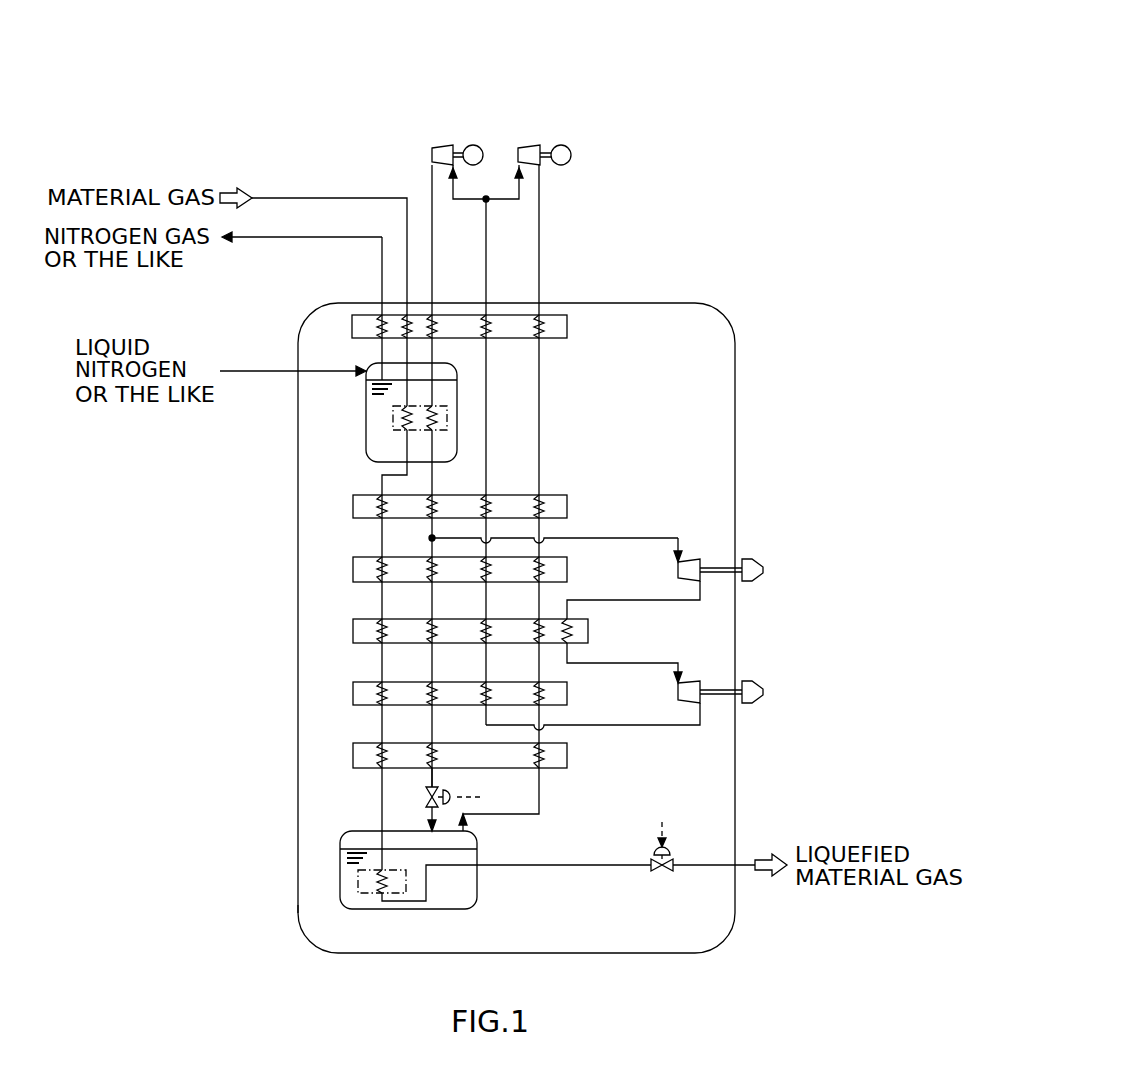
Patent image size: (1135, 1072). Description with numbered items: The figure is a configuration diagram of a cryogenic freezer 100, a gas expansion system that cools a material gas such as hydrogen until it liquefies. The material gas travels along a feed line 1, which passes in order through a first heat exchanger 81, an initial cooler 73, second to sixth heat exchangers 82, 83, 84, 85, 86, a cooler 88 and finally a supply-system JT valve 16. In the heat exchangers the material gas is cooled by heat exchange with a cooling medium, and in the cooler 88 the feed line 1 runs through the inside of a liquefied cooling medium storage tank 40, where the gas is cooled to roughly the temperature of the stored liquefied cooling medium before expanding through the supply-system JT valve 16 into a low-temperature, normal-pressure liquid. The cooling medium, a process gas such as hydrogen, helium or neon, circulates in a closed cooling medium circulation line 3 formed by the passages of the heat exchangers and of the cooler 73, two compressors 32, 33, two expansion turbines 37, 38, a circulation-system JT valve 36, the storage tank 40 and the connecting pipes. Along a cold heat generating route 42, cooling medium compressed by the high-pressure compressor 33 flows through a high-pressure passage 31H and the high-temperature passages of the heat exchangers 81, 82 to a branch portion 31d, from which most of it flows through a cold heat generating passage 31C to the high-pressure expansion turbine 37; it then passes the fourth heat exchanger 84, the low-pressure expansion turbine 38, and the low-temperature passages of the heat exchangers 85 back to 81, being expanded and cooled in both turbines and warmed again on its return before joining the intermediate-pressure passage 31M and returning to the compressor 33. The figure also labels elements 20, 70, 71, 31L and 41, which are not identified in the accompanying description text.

The cryogenic freezer 100 is at (757, 114).
The feed line 1 is at (281, 197).
The cooling medium circulation line 3 is at (588, 284).
The refrigeration unit 20 is at (298, 905).
The liquid nitrogen supply line 70 is at (250, 370).
The liquid nitrogen tank 71 is at (366, 412).
The initial cooler 73 is at (395, 420).
The first heat exchanger 81 is at (352, 325).
The second heat exchanger 82 is at (353, 503).
The third heat exchanger 83 is at (353, 565).
The fourth heat exchanger 84 is at (353, 628).
The fifth heat exchanger 85 is at (353, 690).
The sixth heat exchanger 86 is at (353, 752).
The high-pressure passage 31H is at (431, 176).
The intermediate-pressure passage 31M is at (487, 178).
The low pressure refrigerant line 31L is at (541, 226).
The cold heat generating passage 31C is at (516, 536).
The branch portion 31d is at (430, 538).
The compressor 32 is at (540, 146).
The high-pressure compressor 33 is at (433, 146).
The circulation-system JT valve 36 is at (424, 797).
The high-pressure expansion turbine 37 is at (677, 571).
The low-pressure expansion turbine 38 is at (677, 693).
The liquefied cooling medium storage tank 40 is at (340, 845).
The return line 41 is at (548, 800).
The cold heat generating route 42 is at (694, 538).
The cooler 88 is at (358, 881).
The supply-system JT valve 16 is at (662, 873).